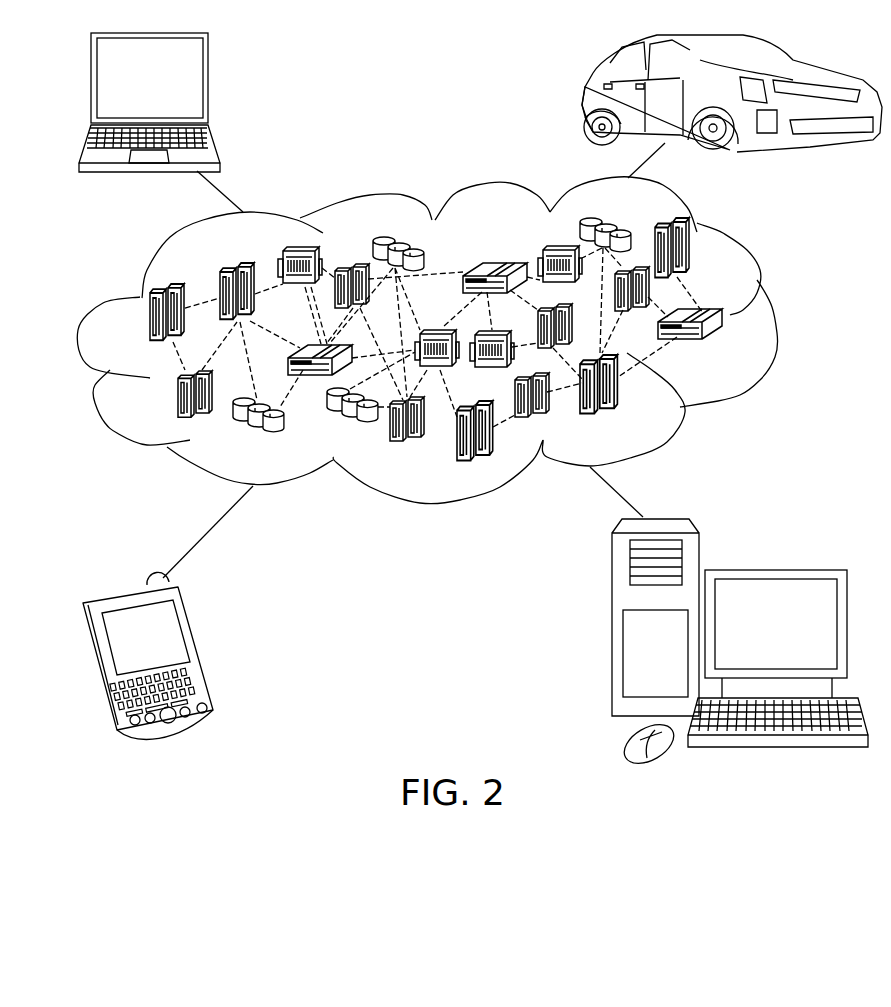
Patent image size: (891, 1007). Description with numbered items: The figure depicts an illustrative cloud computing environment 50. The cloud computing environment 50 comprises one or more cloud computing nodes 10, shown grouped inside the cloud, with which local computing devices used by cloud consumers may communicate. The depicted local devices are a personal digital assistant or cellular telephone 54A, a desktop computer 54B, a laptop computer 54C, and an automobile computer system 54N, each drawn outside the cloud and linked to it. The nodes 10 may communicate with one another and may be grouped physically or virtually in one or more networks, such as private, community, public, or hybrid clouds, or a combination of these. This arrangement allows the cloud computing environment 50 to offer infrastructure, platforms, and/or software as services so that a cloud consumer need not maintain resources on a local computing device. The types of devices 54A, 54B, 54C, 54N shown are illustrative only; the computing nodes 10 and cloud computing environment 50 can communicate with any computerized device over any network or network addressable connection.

The cloud computing node 10 is at (727, 347).
The cloud computing environment 50 is at (775, 321).
The personal digital assistant or cellular telephone 54A is at (202, 648).
The desktop computer 54B is at (773, 568).
The laptop computer 54C is at (209, 83).
The automobile computer system 54N is at (583, 98).